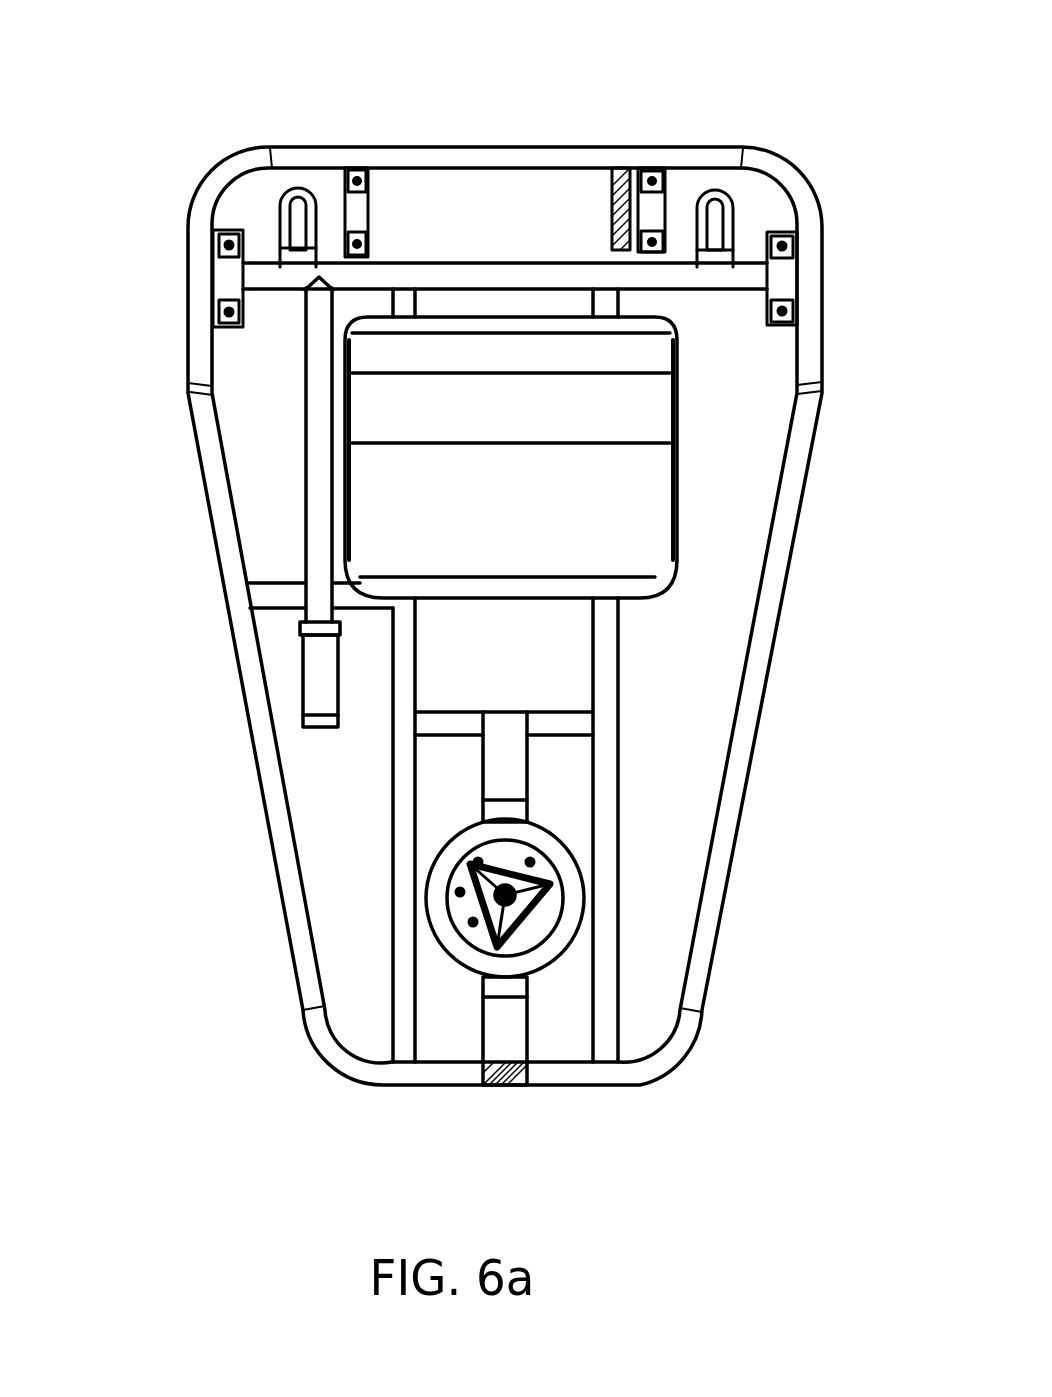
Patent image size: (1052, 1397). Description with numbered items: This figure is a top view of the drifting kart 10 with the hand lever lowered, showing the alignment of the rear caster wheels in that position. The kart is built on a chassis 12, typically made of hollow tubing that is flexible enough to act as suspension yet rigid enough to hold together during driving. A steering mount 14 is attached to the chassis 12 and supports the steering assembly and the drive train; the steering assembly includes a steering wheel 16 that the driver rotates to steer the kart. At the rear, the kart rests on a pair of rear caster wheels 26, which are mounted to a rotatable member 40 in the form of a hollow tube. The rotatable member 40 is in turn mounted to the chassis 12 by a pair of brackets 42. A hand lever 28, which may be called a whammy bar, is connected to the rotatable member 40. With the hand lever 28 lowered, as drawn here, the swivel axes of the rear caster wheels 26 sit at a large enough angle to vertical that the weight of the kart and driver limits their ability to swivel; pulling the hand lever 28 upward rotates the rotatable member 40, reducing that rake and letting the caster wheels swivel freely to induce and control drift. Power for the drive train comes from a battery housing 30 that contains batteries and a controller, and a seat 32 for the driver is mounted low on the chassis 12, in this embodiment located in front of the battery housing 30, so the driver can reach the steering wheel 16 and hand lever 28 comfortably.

The drifting kart 10 is at (218, 1098).
The chassis 12 is at (243, 697).
The steering mount 14 is at (542, 1060).
The steering wheel 16 is at (565, 898).
The rear caster wheels 26 is at (280, 222).
The hand lever 28 is at (302, 487).
The battery housing 30 is at (377, 187).
The seat 32 is at (658, 505).
The rotatable member 40 is at (733, 282).
The brackets 42 is at (208, 253).